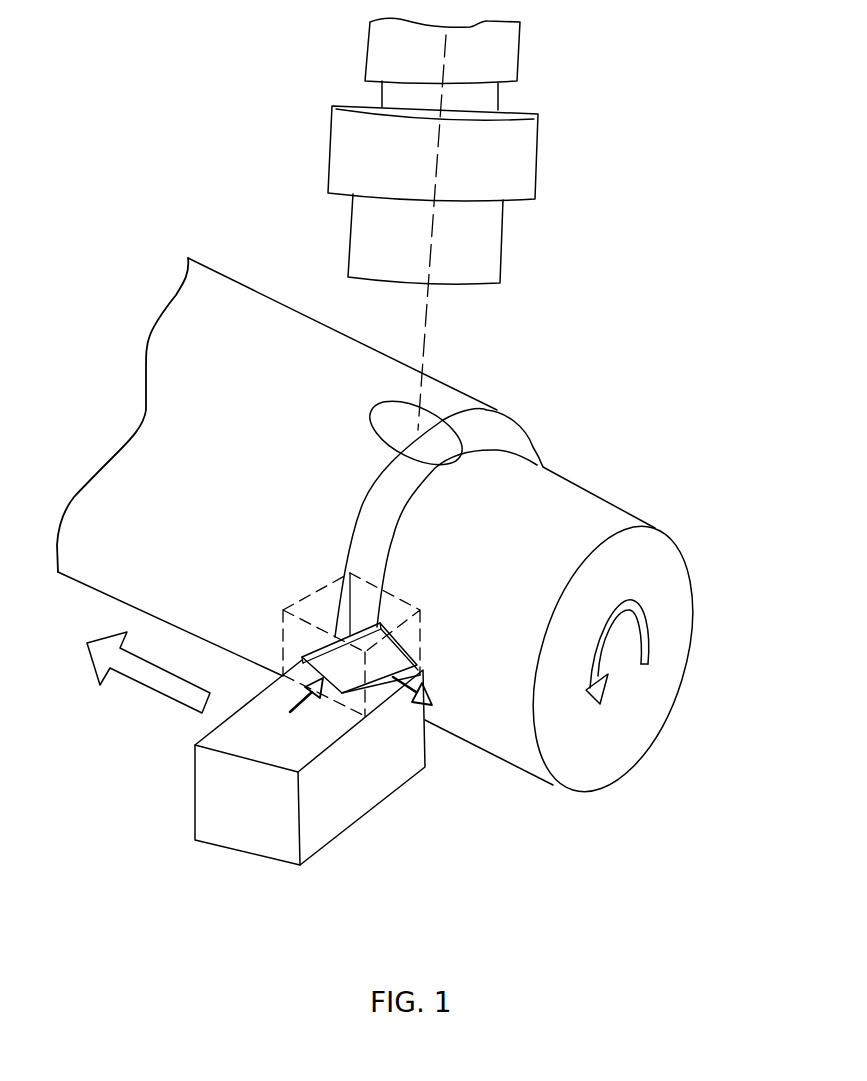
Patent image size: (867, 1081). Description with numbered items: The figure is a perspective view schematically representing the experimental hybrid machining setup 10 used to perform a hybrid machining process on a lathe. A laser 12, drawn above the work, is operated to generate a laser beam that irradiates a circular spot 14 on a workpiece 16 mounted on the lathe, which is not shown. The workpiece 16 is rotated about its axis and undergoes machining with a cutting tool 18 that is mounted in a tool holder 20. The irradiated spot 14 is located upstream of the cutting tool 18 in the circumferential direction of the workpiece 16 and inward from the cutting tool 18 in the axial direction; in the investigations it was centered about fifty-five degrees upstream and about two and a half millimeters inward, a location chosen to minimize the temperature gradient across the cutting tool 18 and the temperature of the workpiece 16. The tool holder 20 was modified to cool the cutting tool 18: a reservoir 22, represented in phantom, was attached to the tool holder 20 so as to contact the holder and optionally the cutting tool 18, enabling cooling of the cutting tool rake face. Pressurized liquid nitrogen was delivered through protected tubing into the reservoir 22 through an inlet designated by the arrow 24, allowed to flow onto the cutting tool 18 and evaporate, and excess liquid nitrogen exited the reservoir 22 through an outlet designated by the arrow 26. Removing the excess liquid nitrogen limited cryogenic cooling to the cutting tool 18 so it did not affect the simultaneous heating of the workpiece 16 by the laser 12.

The hybrid machining setup 10 is at (676, 130).
The laser 12 is at (523, 170).
The irradiated spot 14 is at (378, 420).
The workpiece 16 is at (598, 493).
The cutting tool 18 is at (398, 655).
The tool holder 20 is at (248, 845).
The reservoir 22 is at (322, 598).
The arrow designating inlet 24 is at (300, 712).
The arrow designating outlet 26 is at (437, 693).